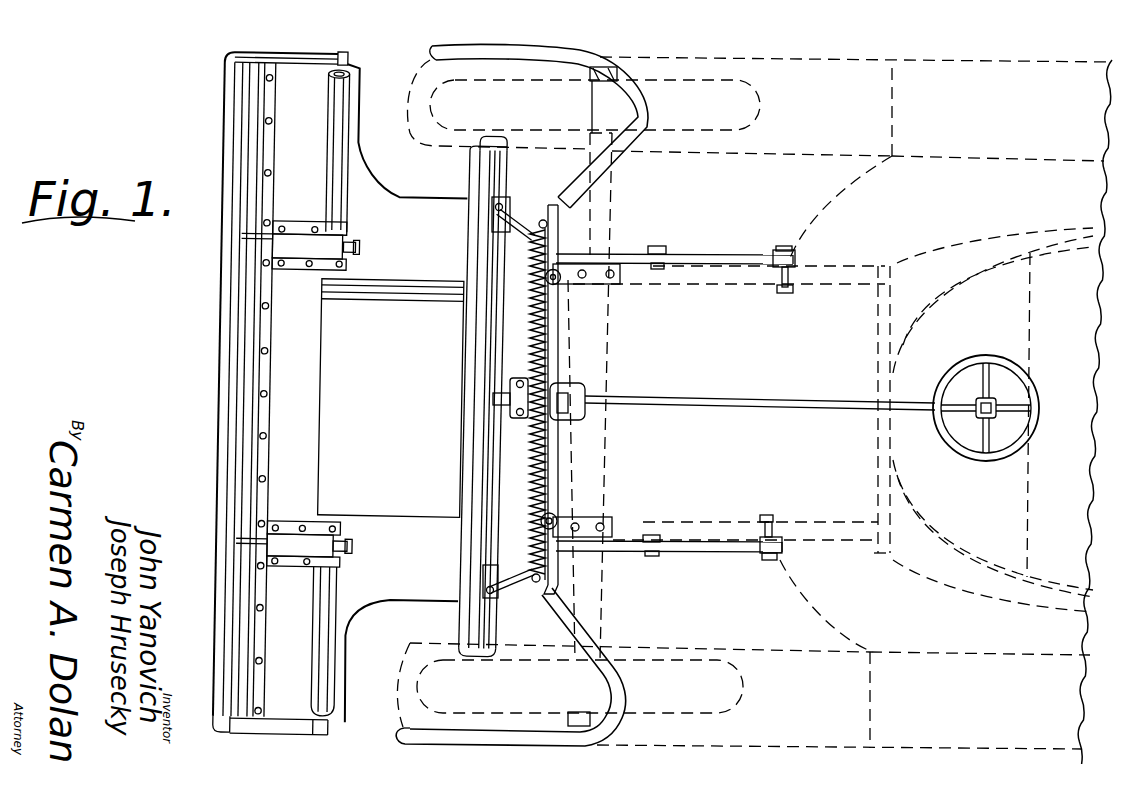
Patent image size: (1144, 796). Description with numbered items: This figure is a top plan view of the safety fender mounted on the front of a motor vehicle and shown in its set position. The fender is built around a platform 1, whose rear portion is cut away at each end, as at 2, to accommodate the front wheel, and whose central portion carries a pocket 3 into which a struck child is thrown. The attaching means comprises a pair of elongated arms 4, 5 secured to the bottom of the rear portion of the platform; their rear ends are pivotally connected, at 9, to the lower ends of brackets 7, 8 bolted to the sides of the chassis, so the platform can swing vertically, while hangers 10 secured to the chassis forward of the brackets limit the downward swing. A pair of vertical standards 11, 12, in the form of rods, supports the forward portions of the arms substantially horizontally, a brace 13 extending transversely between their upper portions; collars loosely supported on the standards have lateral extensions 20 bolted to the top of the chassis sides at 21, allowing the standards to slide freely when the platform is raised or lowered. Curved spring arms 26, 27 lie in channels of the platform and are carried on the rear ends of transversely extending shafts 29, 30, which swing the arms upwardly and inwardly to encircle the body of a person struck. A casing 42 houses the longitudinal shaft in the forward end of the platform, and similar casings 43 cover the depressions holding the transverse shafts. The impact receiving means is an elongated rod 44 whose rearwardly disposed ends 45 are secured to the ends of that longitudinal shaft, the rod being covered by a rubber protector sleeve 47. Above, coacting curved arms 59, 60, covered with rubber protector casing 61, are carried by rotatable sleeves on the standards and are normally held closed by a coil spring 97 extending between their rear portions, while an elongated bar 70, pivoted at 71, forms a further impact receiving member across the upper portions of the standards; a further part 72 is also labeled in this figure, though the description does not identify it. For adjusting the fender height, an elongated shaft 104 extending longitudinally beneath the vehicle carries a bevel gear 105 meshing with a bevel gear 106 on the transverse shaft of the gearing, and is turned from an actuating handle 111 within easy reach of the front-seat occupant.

The platform 1 is at (243, 350).
The cut away portion 2 is at (366, 608).
The pocket 3 is at (391, 398).
The elongated arm 4 is at (665, 556).
The elongated arm 5 is at (676, 253).
The bracket 7 is at (775, 520).
The bracket 8 is at (796, 262).
The pivotal connection 9 is at (768, 562).
The hanger 10 is at (656, 265).
The vertical standard 11 is at (557, 516).
The vertical standard 12 is at (565, 240).
The brace 13 is at (566, 374).
The lateral extension 20 is at (600, 526).
The bolted connection 21 is at (600, 284).
The curved spring arm 26 is at (340, 605).
The curved spring arm 27 is at (334, 197).
The transversely extending shaft 29 is at (362, 544).
The transversely extending shaft 30 is at (362, 245).
The casing 42 is at (270, 452).
The casing 43 is at (297, 226).
The elongated rod 44 is at (233, 730).
The rearwardly disposed end 45 is at (275, 733).
The rubber protector sleeve 47 is at (233, 467).
The coacting curved arm 59 is at (552, 576).
The coacting curved arm 60 is at (604, 193).
The protector casing 61 is at (498, 728).
The elongated bar 70 is at (500, 467).
The pivot 71 is at (500, 408).
The guide 72 is at (478, 380).
The coil spring 97 is at (532, 318).
The elongated shaft 104 is at (798, 400).
The bevel gear 105 is at (572, 396).
The bevel gear 106 is at (588, 418).
The actuating handle 111 is at (1033, 392).